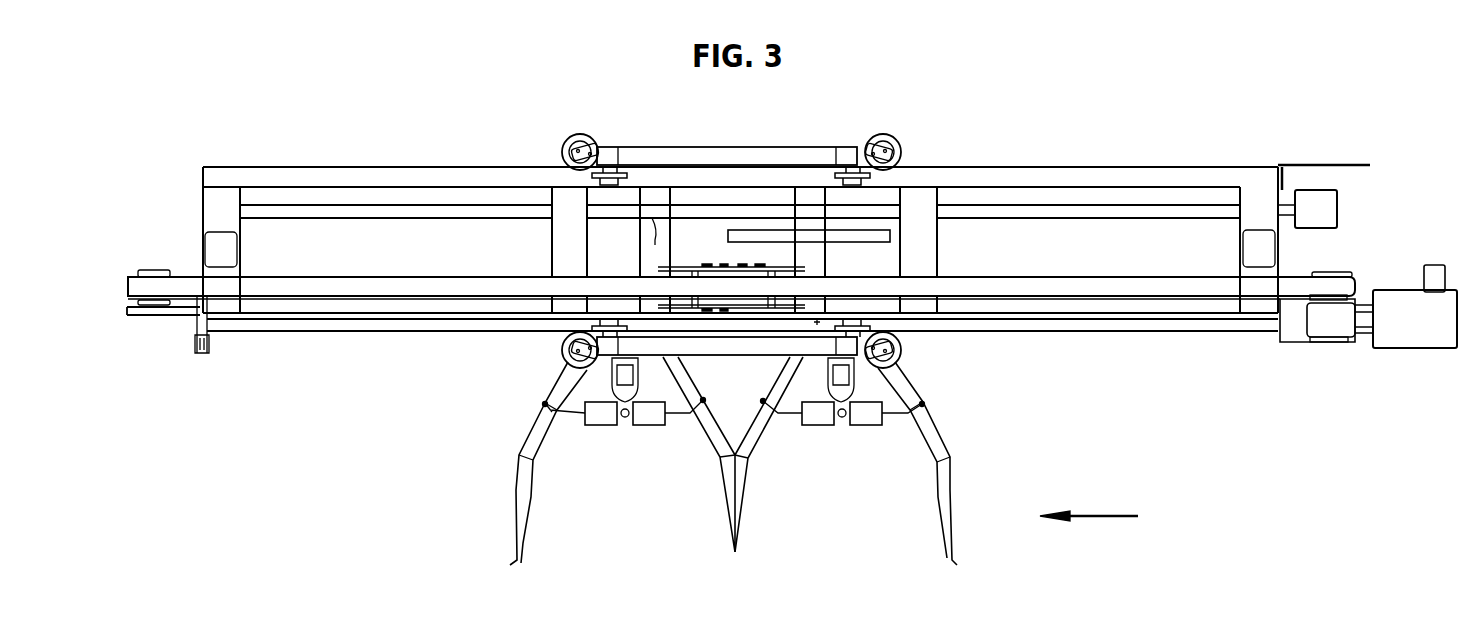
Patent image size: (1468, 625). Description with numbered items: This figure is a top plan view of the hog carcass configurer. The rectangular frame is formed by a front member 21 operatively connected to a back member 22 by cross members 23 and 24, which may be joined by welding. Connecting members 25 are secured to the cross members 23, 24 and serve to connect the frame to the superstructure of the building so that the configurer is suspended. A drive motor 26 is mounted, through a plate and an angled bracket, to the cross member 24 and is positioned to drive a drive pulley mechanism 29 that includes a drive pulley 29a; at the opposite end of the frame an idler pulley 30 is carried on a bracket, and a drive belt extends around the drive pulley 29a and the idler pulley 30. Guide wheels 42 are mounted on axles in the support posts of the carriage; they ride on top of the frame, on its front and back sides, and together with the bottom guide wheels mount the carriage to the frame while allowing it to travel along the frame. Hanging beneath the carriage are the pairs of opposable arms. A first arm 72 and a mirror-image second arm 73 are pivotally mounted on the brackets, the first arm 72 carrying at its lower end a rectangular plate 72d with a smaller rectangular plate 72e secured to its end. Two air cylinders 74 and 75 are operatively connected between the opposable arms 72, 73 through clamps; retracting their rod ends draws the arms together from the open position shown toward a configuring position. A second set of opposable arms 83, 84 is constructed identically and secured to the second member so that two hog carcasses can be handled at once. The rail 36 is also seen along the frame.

The front member 21 is at (387, 329).
The back member 22 is at (378, 175).
The cross member 23 is at (211, 207).
The cross member 24 is at (1253, 200).
The connecting member 25 is at (1243, 248).
The drive motor 26 is at (1408, 340).
The drive pulley mechanism 29 is at (1323, 327).
The drive pulley 29a is at (1345, 273).
The idler pulley 30 is at (170, 273).
The guide rail 36 is at (180, 314).
The guide wheel 42 is at (625, 177).
The first arm 72 is at (558, 377).
The rectangular plate 72d is at (530, 513).
The smaller rectangular plate 72e is at (510, 565).
The second arm 73 is at (703, 381).
The air cylinder 74 is at (600, 426).
The air cylinder 75 is at (651, 424).
The opposable arm 83 is at (765, 428).
The opposable arm 84 is at (920, 438).